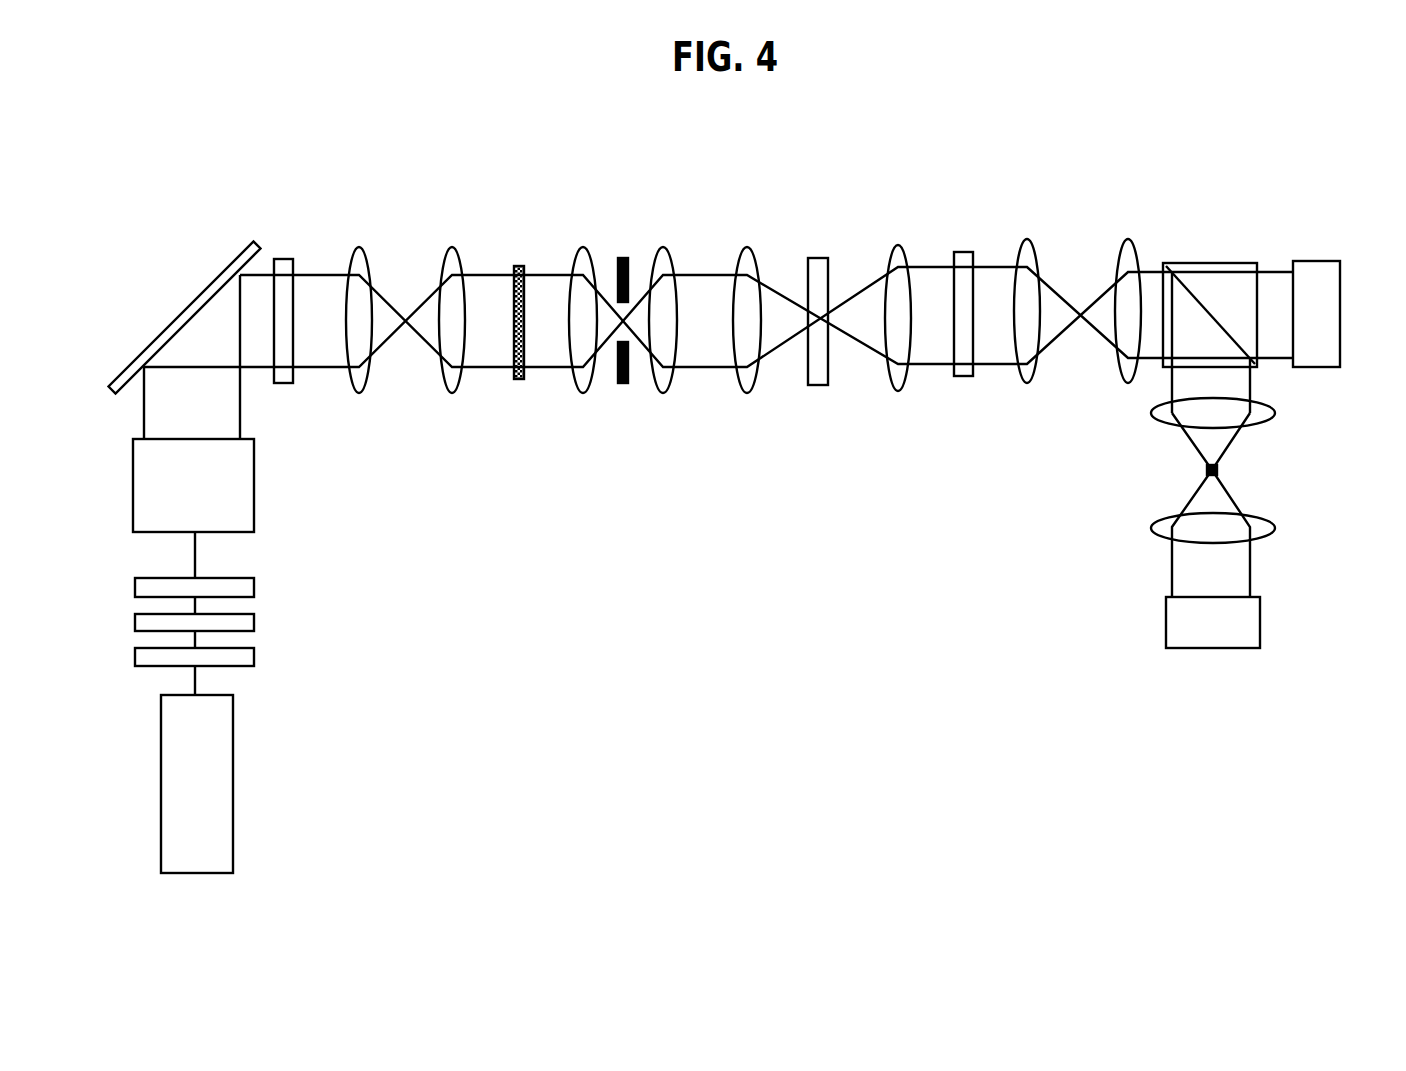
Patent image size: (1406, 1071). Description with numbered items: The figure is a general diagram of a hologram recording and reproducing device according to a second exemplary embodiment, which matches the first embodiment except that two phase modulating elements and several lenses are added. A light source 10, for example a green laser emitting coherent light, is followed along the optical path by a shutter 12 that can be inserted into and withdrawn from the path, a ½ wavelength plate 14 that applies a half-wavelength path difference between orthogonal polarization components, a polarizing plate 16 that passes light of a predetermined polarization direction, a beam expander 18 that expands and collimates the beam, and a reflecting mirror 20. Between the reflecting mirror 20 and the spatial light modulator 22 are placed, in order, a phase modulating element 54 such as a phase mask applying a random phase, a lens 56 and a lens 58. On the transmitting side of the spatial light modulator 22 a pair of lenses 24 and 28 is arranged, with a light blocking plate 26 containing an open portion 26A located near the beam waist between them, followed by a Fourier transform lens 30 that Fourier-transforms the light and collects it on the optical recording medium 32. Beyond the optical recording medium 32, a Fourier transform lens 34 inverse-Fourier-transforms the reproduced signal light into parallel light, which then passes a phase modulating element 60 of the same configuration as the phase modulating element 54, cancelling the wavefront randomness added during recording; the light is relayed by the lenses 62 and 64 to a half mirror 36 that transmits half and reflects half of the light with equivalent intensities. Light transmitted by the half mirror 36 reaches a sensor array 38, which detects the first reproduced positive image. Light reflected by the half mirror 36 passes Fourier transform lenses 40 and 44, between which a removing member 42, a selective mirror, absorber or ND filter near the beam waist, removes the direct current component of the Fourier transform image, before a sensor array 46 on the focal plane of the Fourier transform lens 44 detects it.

The light source 10 is at (218, 776).
The shutter 12 is at (245, 657).
The ½ wavelength plate 14 is at (245, 622).
The polarizing plate 16 is at (245, 587).
The beam expander 18 is at (239, 490).
The reflecting mirror 20 is at (192, 308).
The spatial light modulator 22 is at (520, 264).
The lens 24 is at (583, 256).
The light blocking plate 26 is at (623, 256).
The open portion (aperture) 26A is at (628, 337).
The lens 28 is at (663, 256).
The Fourier transform lens 30 is at (747, 256).
The optical recording medium 32 is at (818, 268).
The Fourier transform lens 34 is at (898, 254).
The half mirror 36 is at (1225, 282).
The sensor array 38 is at (1327, 292).
The Fourier transform lens 40 is at (1263, 410).
The removing member 42 is at (1220, 470).
The Fourier transform lens 44 is at (1263, 528).
The sensor array 46 is at (1247, 628).
The phase modulating element 54 is at (283, 262).
The lens 56 is at (358, 258).
The lens 58 is at (452, 255).
The phase modulating element 60 is at (965, 257).
The lens 62 is at (1027, 250).
The lens 64 is at (1128, 250).